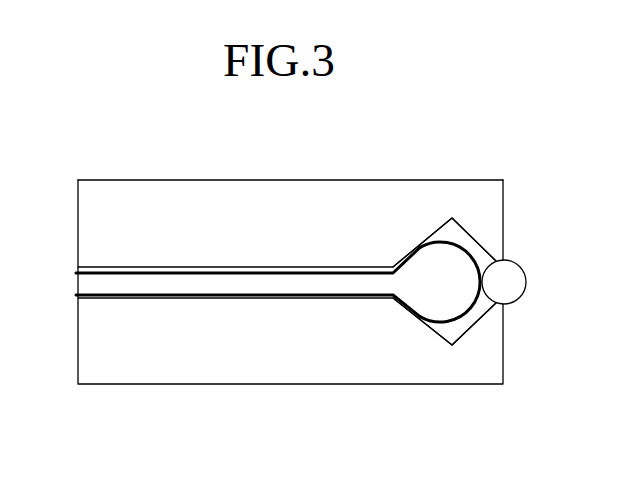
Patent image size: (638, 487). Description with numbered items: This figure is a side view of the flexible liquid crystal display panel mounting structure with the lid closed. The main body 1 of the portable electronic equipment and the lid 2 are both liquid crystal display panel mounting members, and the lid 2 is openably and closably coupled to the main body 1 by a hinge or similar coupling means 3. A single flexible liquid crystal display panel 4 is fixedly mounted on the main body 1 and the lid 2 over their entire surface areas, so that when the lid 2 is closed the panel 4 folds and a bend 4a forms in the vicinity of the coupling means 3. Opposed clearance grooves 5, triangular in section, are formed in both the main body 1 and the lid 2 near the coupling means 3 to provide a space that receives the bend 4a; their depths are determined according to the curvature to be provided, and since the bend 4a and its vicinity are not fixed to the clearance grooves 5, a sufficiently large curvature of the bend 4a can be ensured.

The main body 1 is at (309, 372).
The lid 2 is at (410, 197).
The hinge or coupling means 3 is at (521, 279).
The flexible liquid crystal display panel 4 is at (205, 274).
The bend 4a is at (463, 323).
The clearance grooves 5 is at (458, 237).